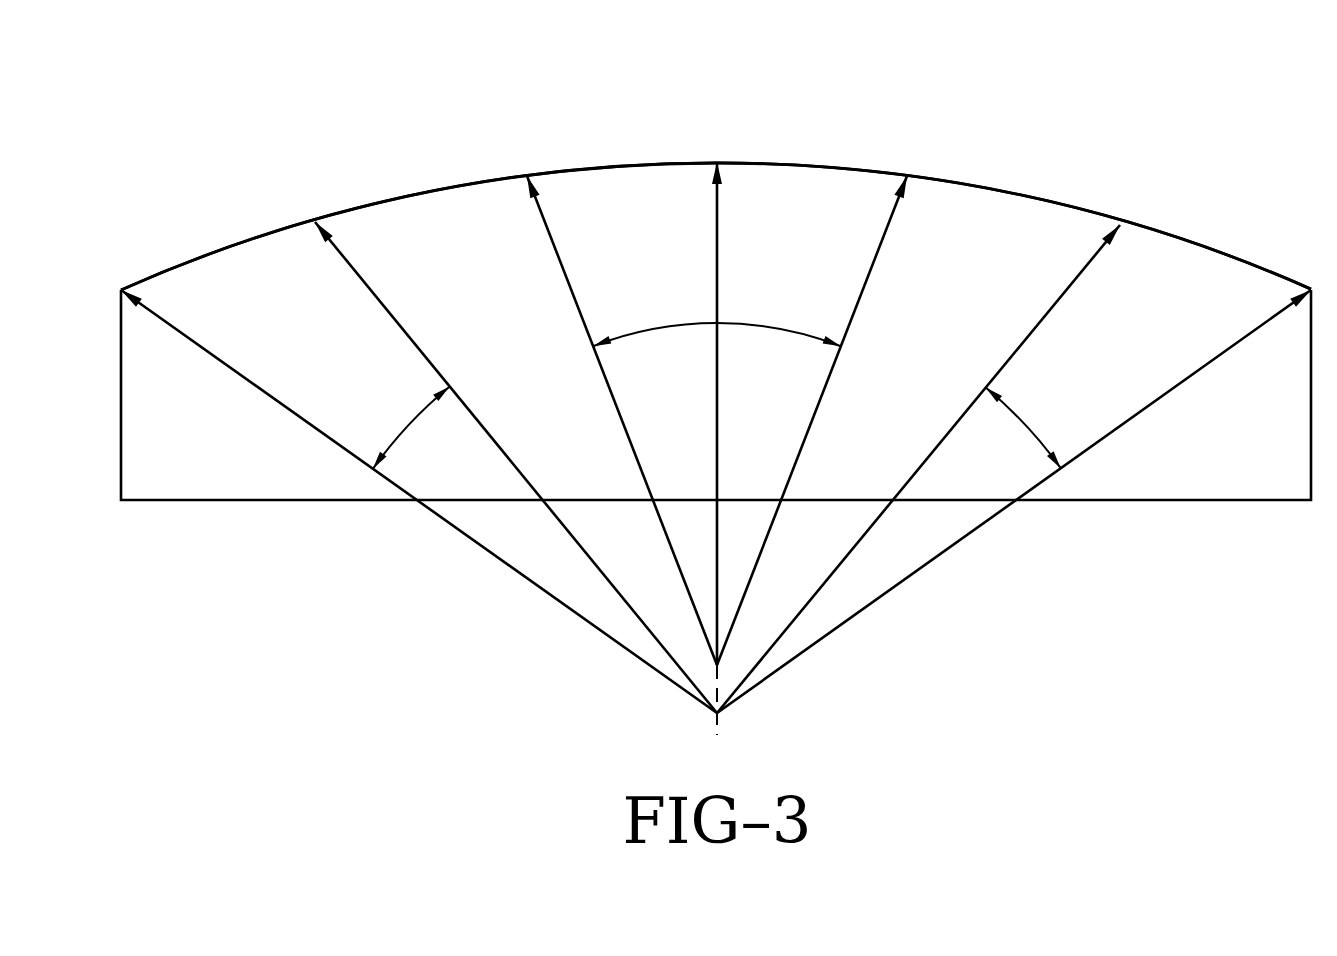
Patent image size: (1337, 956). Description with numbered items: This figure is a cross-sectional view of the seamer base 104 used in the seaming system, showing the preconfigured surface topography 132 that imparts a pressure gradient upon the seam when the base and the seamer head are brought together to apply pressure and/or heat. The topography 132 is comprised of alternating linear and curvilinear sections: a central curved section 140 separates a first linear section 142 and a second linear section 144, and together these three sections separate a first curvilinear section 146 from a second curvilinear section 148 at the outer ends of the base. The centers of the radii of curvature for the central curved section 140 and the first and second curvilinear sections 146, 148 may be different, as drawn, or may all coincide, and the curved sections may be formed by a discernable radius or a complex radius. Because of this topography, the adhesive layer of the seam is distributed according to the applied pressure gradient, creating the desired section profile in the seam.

The seamer base 104 is at (188, 455).
The topography 132 is at (130, 205).
The central curved section 140 is at (531, 163).
The first linear section 142 is at (526, 163).
The second linear section 144 is at (1120, 207).
The first curvilinear section 146 is at (117, 279).
The second curvilinear section 148 is at (1314, 277).